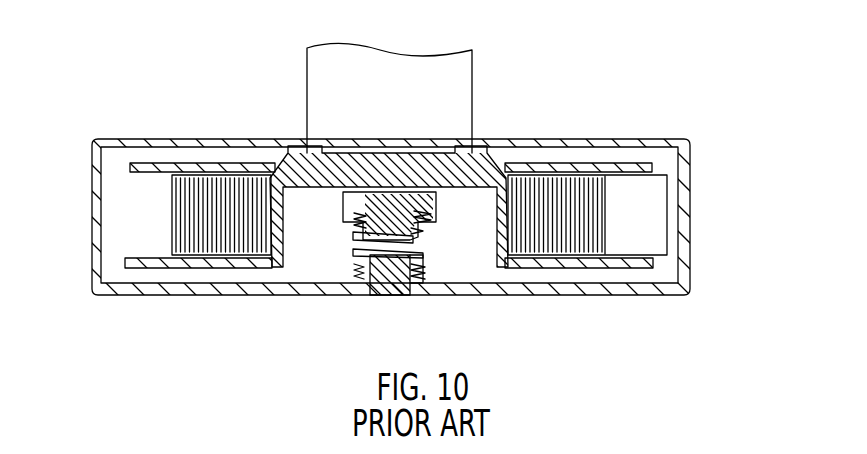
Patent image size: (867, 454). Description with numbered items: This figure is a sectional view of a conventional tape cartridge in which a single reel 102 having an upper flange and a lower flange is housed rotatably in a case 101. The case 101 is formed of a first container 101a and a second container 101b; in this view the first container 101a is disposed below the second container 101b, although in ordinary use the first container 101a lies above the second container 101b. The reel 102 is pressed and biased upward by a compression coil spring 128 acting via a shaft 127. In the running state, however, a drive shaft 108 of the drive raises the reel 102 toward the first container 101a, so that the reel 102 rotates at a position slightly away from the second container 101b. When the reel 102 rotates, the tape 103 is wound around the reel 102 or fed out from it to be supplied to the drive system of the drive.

The case 101 is at (410, 174).
The first container 101a is at (92, 247).
The second container 101b is at (102, 188).
The reel 102 is at (290, 151).
The tape 103 is at (637, 210).
The drive shaft 108 is at (477, 77).
The shaft 127 is at (437, 215).
The compression coil spring 128 is at (424, 233).